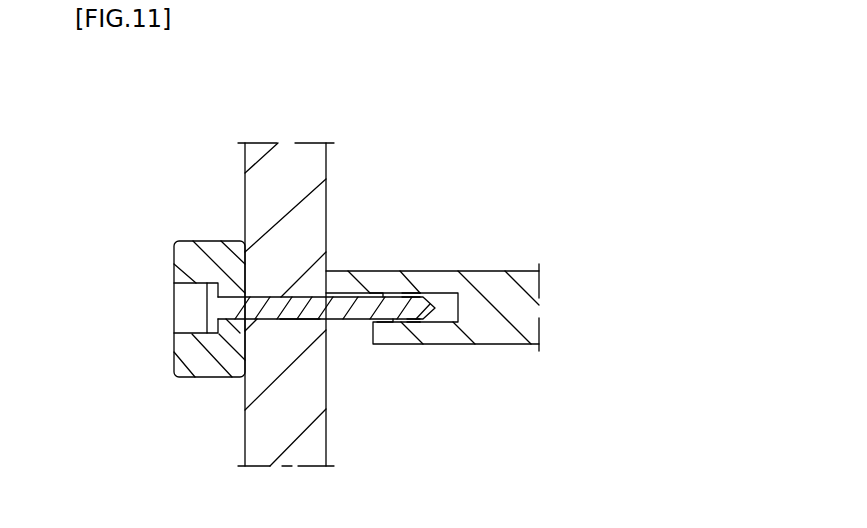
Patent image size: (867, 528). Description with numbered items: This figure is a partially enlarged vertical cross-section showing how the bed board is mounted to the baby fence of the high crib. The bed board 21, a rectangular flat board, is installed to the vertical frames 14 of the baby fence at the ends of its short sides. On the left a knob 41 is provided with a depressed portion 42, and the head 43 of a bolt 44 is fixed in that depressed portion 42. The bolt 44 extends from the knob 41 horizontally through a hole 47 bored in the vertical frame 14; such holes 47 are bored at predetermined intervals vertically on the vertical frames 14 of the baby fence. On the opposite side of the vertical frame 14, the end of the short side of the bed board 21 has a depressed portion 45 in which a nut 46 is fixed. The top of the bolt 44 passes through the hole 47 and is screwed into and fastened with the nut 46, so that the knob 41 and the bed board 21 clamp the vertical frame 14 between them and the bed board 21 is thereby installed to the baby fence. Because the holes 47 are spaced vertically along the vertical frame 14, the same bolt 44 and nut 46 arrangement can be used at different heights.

The vertical frame 14 is at (288, 150).
The bed board 21 is at (525, 271).
The knob 41 is at (208, 241).
The depressed portion 42 is at (183, 317).
The head 43 is at (207, 300).
The bolt 44 is at (273, 295).
The depressed portion 45 is at (450, 303).
The nut 46 is at (402, 293).
The hole 47 is at (296, 322).